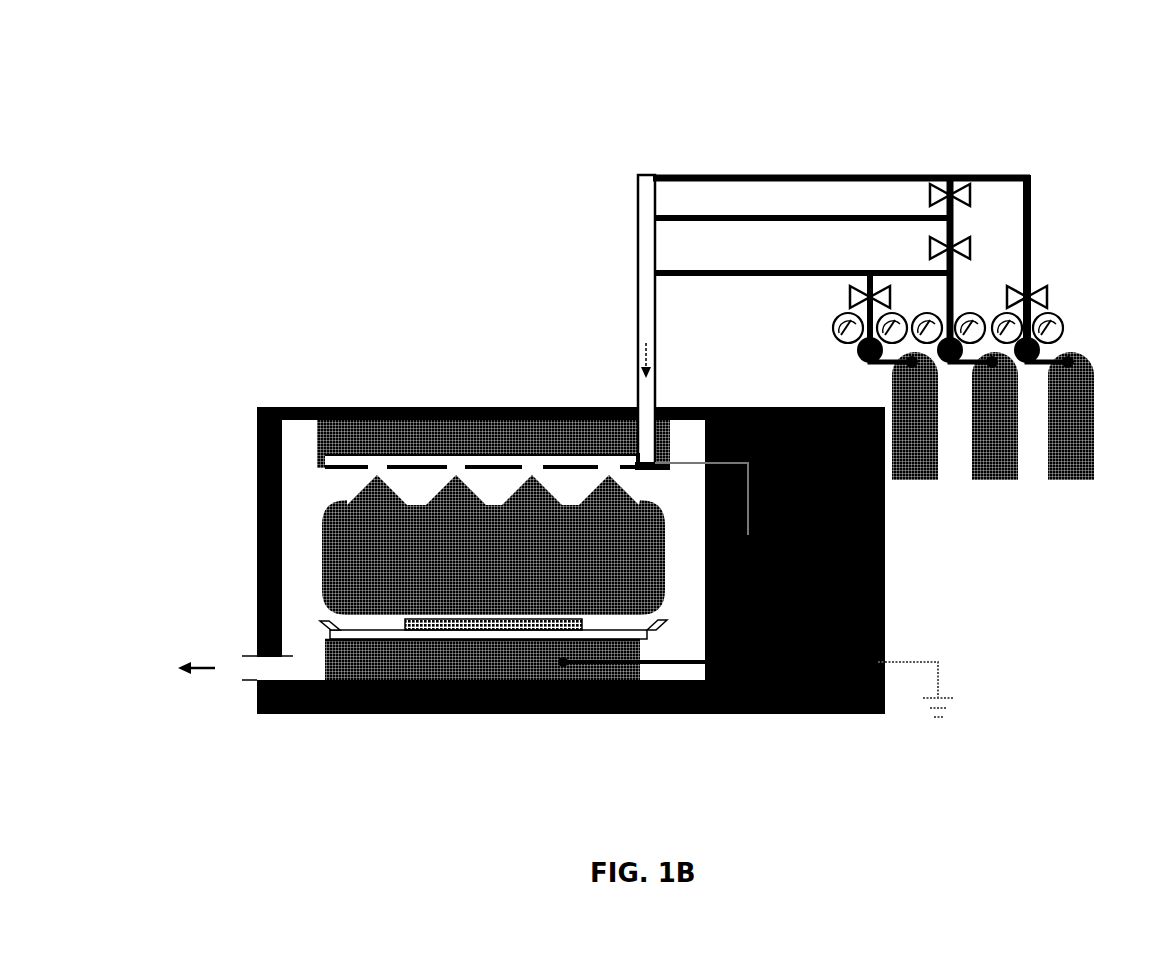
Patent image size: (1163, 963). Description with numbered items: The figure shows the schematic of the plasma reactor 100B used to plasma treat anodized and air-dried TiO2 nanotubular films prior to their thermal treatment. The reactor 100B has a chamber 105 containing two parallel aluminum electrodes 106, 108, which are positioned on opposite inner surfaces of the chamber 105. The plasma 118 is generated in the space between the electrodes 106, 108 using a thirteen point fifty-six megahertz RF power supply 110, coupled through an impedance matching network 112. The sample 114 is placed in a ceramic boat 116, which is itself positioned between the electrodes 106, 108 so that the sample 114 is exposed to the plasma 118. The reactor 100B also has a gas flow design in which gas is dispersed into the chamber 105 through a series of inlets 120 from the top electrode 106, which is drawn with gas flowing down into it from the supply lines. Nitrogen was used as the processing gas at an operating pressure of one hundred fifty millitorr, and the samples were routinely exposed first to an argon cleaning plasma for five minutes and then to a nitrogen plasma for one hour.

The plasma reactor 100B is at (1074, 203).
The chamber 105 is at (302, 527).
The top electrode 106 is at (365, 435).
The electrode 108 is at (365, 663).
The RF power supply 110 is at (848, 714).
The impedance matching network 112 is at (815, 578).
The sample 114 is at (428, 613).
The ceramic boat 116 is at (648, 632).
The plasma 118 is at (493, 545).
The inlets 120 is at (698, 272).